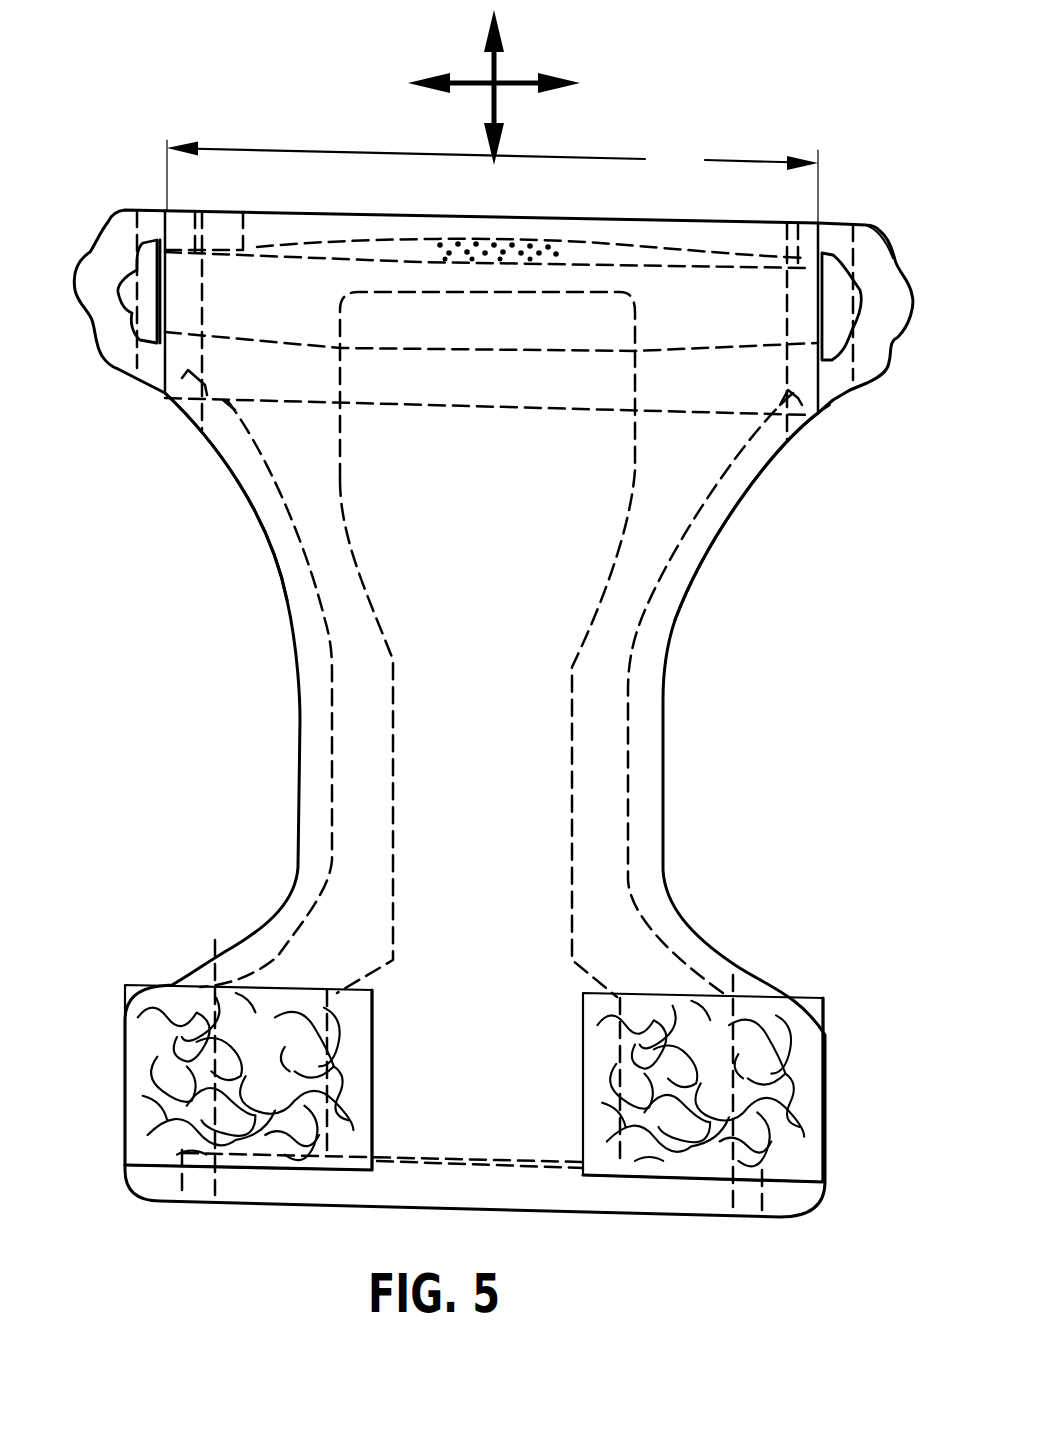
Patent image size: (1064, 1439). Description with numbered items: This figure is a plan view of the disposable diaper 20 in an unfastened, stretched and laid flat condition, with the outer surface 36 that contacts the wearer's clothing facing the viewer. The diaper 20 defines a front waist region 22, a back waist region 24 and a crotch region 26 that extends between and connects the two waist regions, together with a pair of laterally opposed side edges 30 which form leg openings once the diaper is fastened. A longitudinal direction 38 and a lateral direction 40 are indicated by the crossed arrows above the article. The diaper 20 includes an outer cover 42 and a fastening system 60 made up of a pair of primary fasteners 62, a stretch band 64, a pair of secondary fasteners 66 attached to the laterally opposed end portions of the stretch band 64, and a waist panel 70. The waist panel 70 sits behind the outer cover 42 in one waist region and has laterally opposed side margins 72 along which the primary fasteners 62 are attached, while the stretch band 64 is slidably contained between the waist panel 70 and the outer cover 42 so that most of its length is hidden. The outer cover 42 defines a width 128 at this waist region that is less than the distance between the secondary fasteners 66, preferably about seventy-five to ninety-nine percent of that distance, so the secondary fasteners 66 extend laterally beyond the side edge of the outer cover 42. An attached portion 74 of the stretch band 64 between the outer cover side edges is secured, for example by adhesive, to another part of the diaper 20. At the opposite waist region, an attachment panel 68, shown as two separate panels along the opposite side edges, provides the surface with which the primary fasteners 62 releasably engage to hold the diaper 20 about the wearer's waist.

The disposable diaper 20 is at (147, 126).
The front waist region 22 is at (852, 957).
The back waist region 24 is at (857, 522).
The crotch region 26 is at (812, 691).
The side edges 30 is at (259, 528).
The outer surface 36 is at (410, 598).
The longitudinal direction 38 is at (500, 62).
The lateral direction 40 is at (520, 88).
The outer cover 42 is at (702, 382).
The fastening system 60 is at (872, 190).
The primary fasteners 62 is at (96, 245).
The stretch band 64 is at (241, 212).
The secondary fasteners 66 is at (152, 238).
The attachment panel 68 is at (812, 1185).
The waist panel 70 is at (490, 406).
The side margins 72 is at (835, 410).
The attached portion 74 is at (530, 240).
The width 128 is at (492, 181).